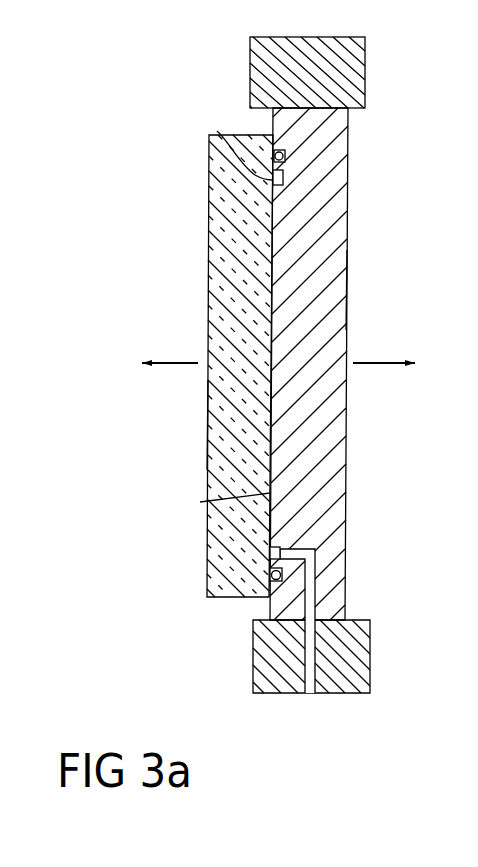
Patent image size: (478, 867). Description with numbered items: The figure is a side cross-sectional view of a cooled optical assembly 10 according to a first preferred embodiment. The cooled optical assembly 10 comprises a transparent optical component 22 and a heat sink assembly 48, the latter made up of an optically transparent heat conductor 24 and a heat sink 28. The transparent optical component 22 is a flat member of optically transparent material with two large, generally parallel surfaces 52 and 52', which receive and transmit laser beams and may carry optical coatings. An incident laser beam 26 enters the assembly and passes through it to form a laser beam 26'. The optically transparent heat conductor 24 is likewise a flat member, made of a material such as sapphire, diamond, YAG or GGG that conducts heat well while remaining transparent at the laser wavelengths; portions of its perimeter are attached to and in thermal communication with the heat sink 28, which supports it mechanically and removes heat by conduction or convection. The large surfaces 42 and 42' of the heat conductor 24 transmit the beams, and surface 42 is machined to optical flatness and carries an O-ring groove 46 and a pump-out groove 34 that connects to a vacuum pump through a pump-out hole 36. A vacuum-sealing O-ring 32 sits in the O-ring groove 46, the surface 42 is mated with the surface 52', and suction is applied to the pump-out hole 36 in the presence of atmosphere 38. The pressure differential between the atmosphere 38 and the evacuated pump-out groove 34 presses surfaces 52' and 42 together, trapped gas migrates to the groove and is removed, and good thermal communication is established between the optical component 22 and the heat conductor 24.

The cooled optical assembly 10 is at (184, 62).
The transparent optical component 22 is at (233, 295).
The optically transparent heat conductor 24 is at (347, 437).
The incident laser beam 26 is at (145, 337).
The transmitted laser beam 26' is at (403, 345).
The heat sink 28 is at (370, 655).
The vacuum-sealing O-ring 32 is at (286, 156).
The pump-out groove 34 is at (217, 131).
The pump-out hole 36 is at (313, 560).
The atmosphere 38 is at (175, 220).
The THC surface 42 is at (196, 500).
The THC surface 42' is at (362, 621).
The O-ring groove 46 is at (286, 152).
The heat sink assembly 48 is at (240, 675).
The TOC surface 52 is at (166, 425).
The TOC surface 52' is at (350, 290).